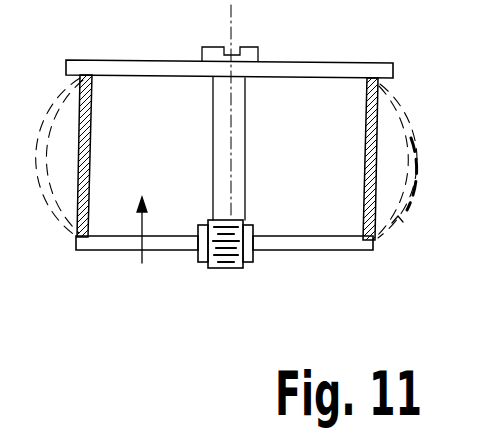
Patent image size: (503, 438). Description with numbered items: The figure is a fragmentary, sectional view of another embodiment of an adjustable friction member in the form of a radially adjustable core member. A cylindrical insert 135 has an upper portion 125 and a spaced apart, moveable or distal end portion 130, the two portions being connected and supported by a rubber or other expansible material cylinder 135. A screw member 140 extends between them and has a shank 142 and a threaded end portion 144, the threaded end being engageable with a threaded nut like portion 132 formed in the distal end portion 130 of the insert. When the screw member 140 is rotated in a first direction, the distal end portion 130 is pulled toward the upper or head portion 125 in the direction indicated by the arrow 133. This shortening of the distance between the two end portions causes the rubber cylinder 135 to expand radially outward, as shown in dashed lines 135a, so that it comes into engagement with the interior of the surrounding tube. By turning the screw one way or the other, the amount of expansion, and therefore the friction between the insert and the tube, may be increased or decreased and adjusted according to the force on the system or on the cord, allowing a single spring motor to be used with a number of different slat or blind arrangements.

The upper portion 125 is at (330, 64).
The distal end portion 130 is at (324, 249).
The threaded nut like portion 132 is at (200, 258).
The arrow 133 is at (142, 222).
The cylindrical insert / expansible material cylinder 135 is at (367, 147).
The expanded rubber cylinder (dashed lines) 135a is at (253, 166).
The screw member 140 is at (256, 60).
The shank 142 is at (232, 128).
The threaded end portion 144 is at (232, 270).